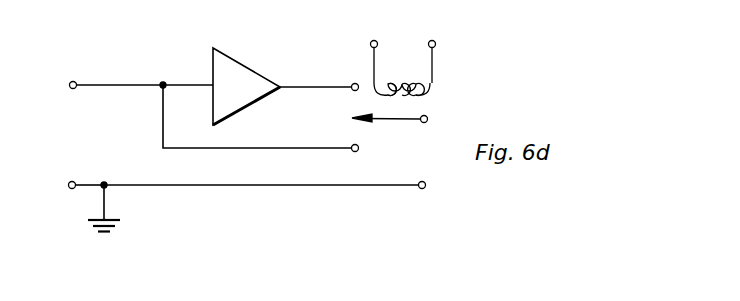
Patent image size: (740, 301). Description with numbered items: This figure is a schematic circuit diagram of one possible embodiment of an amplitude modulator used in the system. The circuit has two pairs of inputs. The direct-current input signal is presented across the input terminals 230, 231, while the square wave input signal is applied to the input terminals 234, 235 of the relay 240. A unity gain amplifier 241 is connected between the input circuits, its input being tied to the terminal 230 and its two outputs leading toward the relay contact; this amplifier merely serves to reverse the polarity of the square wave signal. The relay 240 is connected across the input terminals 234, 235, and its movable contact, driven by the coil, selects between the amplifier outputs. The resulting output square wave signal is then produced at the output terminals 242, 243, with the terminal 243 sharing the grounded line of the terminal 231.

The input terminal 230 is at (71, 89).
The input terminal 231 is at (69, 188).
The input terminal 234 is at (377, 41).
The input terminal 235 is at (436, 44).
The relay 240 is at (388, 128).
The unity gain amplifier 241 is at (247, 63).
The output terminal 242 is at (427, 116).
The output terminal 243 is at (420, 189).